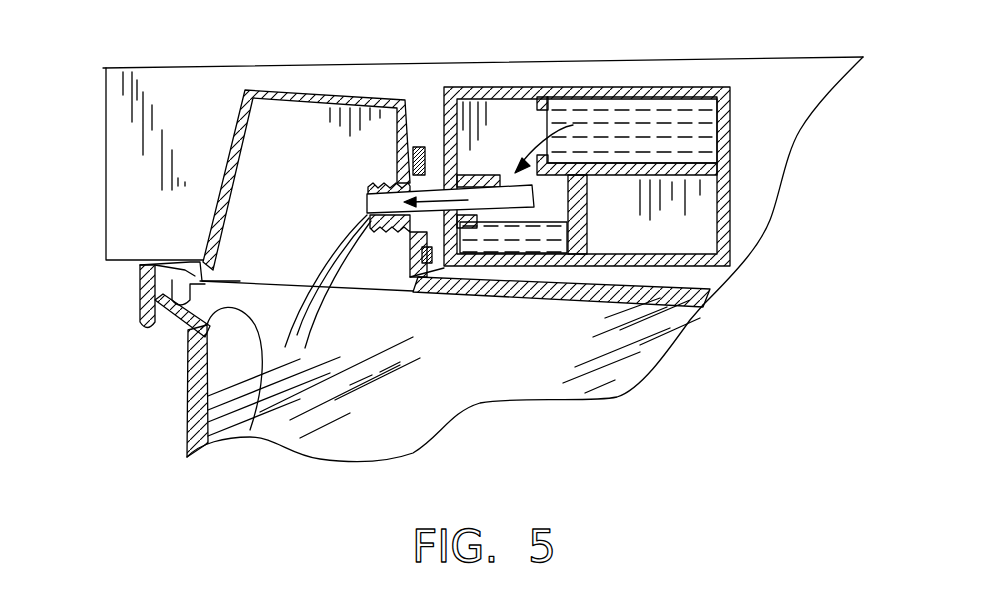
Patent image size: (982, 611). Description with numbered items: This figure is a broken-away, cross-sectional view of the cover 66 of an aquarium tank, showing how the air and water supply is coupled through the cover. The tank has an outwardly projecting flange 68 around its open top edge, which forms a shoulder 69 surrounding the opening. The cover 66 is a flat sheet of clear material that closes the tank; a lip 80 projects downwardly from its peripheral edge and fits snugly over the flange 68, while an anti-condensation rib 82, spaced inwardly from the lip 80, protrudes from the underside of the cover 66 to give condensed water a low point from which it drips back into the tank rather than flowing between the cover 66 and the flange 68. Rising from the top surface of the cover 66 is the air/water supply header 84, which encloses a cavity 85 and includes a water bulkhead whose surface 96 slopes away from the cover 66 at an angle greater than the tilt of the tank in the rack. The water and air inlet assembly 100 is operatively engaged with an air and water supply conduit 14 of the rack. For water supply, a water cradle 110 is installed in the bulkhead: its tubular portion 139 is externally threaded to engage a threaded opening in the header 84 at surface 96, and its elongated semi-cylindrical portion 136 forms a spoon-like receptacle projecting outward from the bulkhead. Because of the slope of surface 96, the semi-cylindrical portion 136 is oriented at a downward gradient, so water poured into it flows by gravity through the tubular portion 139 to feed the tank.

The air and water supply conduit 14 is at (735, 193).
The cover 66 is at (592, 305).
The flange 68 is at (180, 330).
The shoulder 69 is at (250, 430).
The lip 80 is at (140, 283).
The anti-condensation rib 82 is at (183, 297).
The air/water supply header 84 is at (210, 109).
The cavity 85 is at (319, 197).
The surface of water bulkhead 96 is at (413, 147).
The water and air inlet assembly 100 is at (435, 78).
The water cradle 110 is at (533, 193).
The semi-cylindrical portion 136 is at (478, 212).
The tubular portion 139 is at (385, 232).